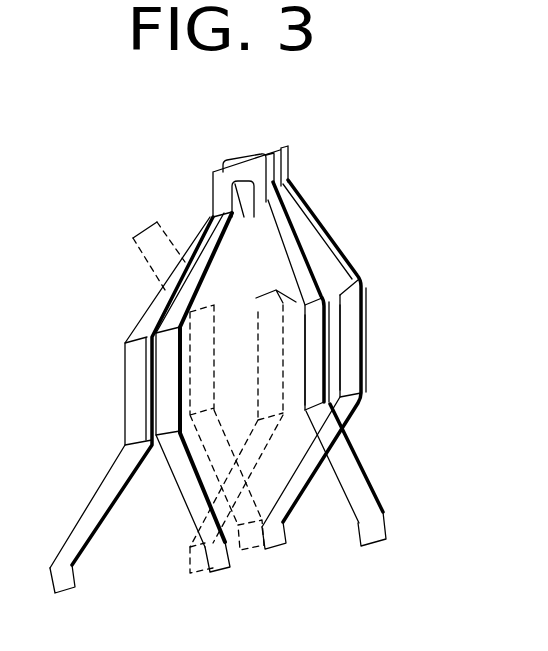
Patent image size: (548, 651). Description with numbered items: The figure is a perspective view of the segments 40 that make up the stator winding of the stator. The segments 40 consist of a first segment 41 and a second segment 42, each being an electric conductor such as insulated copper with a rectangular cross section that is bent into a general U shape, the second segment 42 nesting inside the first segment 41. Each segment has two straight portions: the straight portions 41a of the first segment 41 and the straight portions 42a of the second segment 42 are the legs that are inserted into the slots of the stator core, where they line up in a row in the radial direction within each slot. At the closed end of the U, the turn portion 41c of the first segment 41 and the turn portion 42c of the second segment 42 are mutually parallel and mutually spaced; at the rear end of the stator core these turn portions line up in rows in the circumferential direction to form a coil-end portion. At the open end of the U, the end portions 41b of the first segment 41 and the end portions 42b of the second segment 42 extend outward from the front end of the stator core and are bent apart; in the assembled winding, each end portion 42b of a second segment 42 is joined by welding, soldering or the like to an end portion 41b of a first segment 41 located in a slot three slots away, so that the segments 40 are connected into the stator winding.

The segments 40 is at (92, 173).
The first segment 41 is at (367, 272).
The second segment 42 is at (313, 268).
The straight portion 41a is at (350, 358).
The straight portion 42a is at (316, 346).
The end portion 41b is at (73, 574).
The end portion 42b is at (365, 521).
The turn portion 41c is at (279, 149).
The turn portion 42c is at (257, 174).